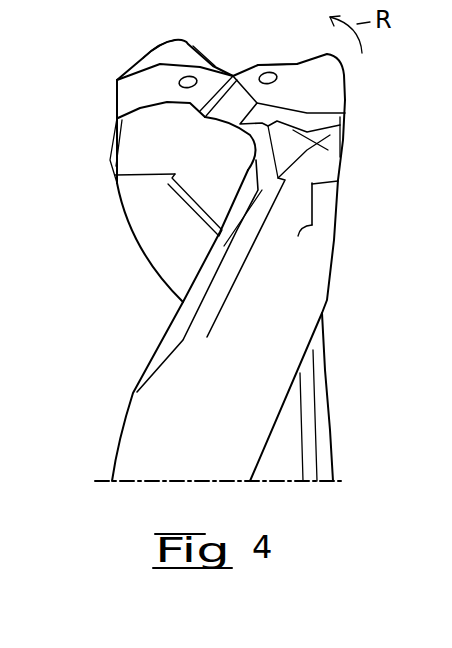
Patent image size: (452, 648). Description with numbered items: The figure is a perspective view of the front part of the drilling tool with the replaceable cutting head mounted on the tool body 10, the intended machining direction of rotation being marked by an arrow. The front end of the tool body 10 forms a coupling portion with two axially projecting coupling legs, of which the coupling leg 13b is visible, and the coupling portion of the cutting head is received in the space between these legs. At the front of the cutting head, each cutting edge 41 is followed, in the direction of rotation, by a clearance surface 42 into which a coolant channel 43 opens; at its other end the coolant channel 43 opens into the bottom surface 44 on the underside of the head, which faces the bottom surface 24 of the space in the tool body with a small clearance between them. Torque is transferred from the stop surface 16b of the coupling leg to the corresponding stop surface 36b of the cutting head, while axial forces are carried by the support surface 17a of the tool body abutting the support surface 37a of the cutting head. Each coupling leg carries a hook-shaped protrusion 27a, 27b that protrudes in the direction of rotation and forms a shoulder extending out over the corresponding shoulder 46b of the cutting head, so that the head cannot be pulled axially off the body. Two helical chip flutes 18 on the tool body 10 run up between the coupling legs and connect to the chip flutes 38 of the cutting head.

The tool body 10 is at (328, 300).
The coupling leg 13b is at (306, 180).
The stop surface 16b is at (298, 236).
The support surface 17a is at (153, 183).
The chip flute 18 is at (163, 257).
The bottom surface 24 is at (207, 224).
The hook-shaped protrusion 27a is at (160, 62).
The hook-shaped protrusion 27b is at (303, 152).
The stop surface 36b is at (312, 209).
The support surface 37a is at (118, 168).
The chip flute 38 is at (118, 118).
The cutting edge 41 is at (297, 63).
The clearance surface 42 is at (140, 97).
The coolant channel 43 is at (197, 76).
The bottom surface 44 is at (214, 216).
The shoulder 46b is at (333, 123).